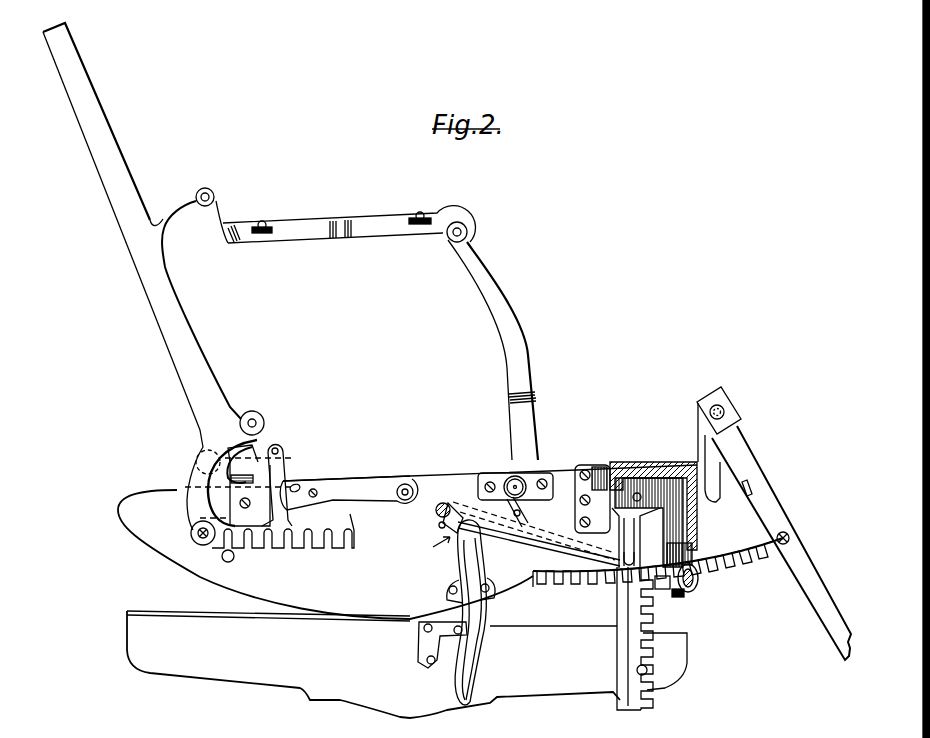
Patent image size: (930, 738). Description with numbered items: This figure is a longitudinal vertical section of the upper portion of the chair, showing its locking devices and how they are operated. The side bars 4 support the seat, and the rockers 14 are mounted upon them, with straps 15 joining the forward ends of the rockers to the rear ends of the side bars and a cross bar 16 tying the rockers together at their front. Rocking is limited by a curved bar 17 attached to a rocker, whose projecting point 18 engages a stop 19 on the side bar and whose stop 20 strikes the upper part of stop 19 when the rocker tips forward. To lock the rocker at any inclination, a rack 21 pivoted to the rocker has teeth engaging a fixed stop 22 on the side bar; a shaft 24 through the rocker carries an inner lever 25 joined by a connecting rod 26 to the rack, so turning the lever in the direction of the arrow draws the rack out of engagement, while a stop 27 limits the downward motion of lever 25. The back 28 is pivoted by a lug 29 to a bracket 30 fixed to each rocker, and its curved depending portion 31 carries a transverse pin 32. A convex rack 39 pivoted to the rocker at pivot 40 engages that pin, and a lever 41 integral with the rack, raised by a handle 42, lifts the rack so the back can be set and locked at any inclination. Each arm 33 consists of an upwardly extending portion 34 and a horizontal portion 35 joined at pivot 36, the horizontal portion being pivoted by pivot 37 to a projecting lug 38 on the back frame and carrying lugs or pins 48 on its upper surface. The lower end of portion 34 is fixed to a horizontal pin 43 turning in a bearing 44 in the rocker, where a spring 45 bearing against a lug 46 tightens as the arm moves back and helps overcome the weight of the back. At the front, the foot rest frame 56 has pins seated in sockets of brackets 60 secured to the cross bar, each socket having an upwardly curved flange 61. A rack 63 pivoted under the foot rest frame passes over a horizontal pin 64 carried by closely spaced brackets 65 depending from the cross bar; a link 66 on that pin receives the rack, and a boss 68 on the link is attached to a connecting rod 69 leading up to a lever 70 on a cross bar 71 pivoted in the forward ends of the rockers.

The side bar 4 is at (407, 664).
The rocker 14 is at (407, 542).
The strap 15 is at (148, 609).
The cross bar 16 is at (621, 462).
The bar 17 is at (476, 551).
The projecting point 18 is at (456, 692).
The stop 19 is at (458, 637).
The stop 20 is at (442, 608).
The rack 21 is at (662, 596).
The fixed stop 22 is at (630, 627).
The shaft 24 is at (443, 504).
The lever 25 is at (463, 504).
The connecting rod 26 is at (531, 543).
The stop 27 is at (438, 526).
The back 28 is at (191, 318).
The lug 29 is at (243, 418).
The bracket 30 is at (260, 440).
The depending portion 31 is at (192, 490).
The pin 32 is at (196, 541).
The arm 33 is at (439, 268).
The upwardly extending portion 34 is at (512, 317).
The horizontal portion 35 is at (378, 224).
The pivot 36 is at (464, 226).
The pivot 37 is at (213, 195).
The projecting lug 38 is at (172, 208).
The convex rack 39 is at (352, 496).
The pivot 40 is at (412, 485).
The lever 41 is at (284, 470).
The handle 42 is at (263, 446).
The horizontal pin 43 is at (508, 477).
The bearing 44 is at (537, 480).
The spring 45 is at (518, 477).
The lug 46 is at (521, 513).
The lug or pin 48 is at (267, 222).
The foot rest frame 56 is at (770, 498).
The bracket 60 is at (708, 445).
The upwardly curved flange 61 is at (728, 402).
The rack 63 is at (708, 560).
The horizontal pin 64 is at (700, 561).
The bracket 65 is at (685, 528).
The link 66 is at (700, 584).
The boss 68 is at (681, 593).
The connecting rod 69 is at (666, 553).
The lever 70 is at (660, 478).
The cross bar 71 is at (640, 468).